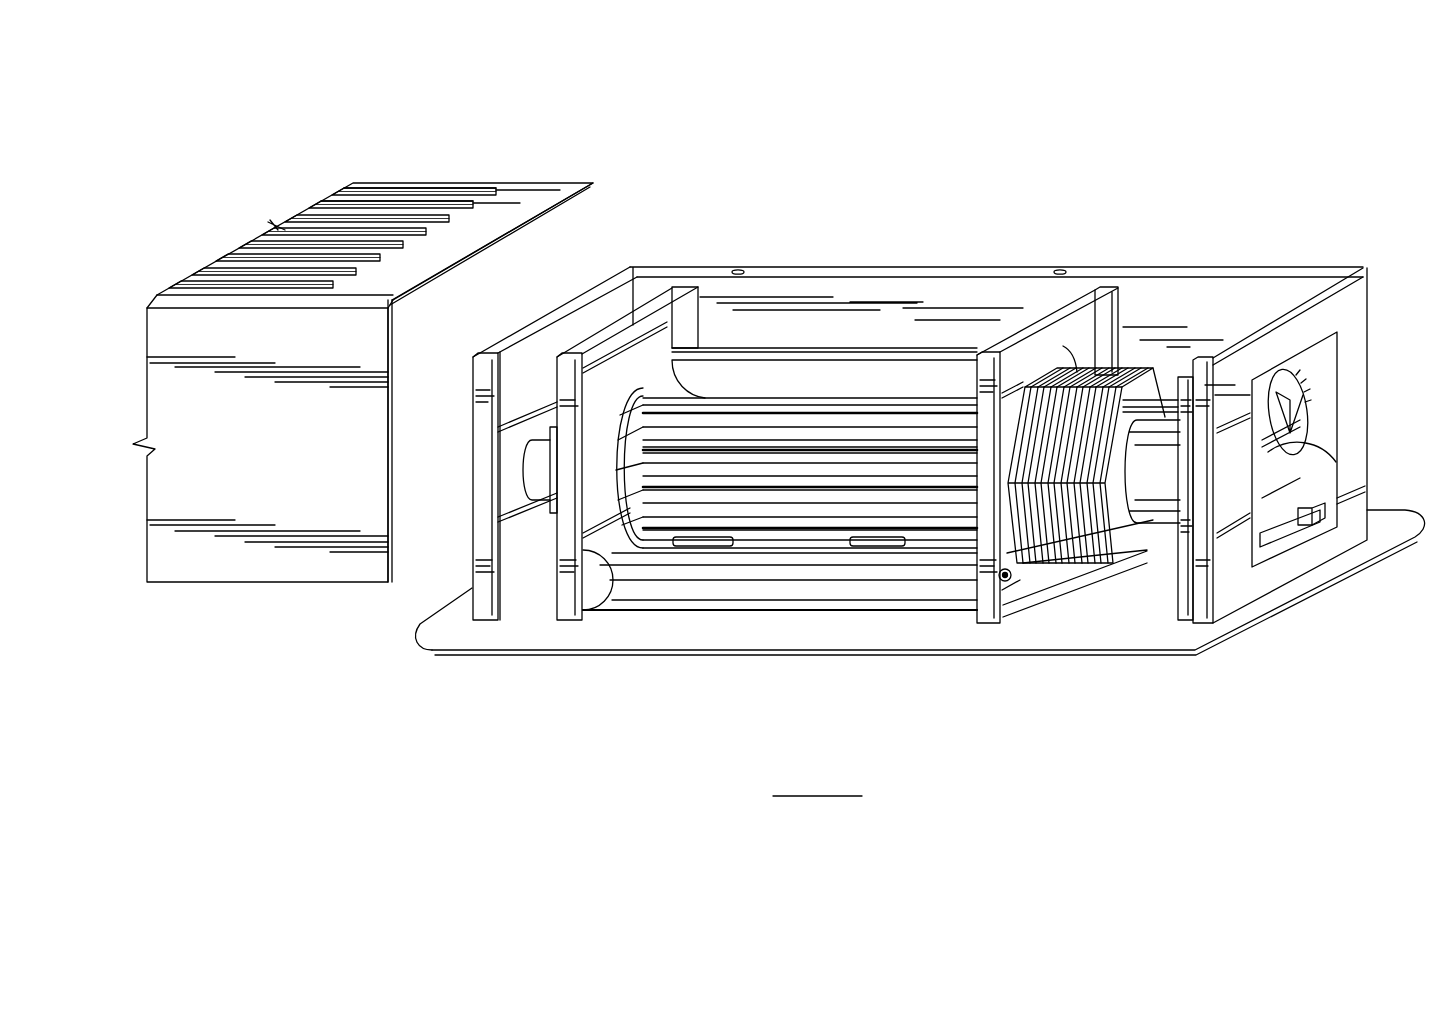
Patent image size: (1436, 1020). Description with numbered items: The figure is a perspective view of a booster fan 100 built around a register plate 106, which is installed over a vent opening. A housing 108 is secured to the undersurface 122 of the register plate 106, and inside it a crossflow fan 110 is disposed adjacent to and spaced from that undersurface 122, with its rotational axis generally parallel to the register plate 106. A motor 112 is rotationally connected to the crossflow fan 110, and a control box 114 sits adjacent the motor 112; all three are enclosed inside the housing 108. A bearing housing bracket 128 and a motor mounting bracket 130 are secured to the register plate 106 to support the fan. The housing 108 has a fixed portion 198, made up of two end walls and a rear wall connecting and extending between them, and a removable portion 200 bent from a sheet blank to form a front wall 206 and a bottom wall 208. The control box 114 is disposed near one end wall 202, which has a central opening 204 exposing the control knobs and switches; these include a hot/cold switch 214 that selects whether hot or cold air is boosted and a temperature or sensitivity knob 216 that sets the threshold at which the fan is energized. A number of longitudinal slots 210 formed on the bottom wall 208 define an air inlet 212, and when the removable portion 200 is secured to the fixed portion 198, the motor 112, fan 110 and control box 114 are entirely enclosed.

The booster fan 100 is at (1236, 180).
The register plate 106 is at (458, 628).
The housing 108 is at (708, 272).
The crossflow fan 110 is at (756, 425).
The motor 112 is at (1103, 347).
The control box 114 is at (1180, 567).
The undersurface of the register plate 122 is at (663, 633).
The bearing housing bracket 128 is at (565, 615).
The motor mounting bracket 130 is at (990, 615).
The fixed portion 198 is at (663, 268).
The removable portion 200 is at (556, 189).
The end wall 202 is at (1350, 300).
The central opening 204 is at (1260, 570).
The front wall 206 is at (258, 565).
The bottom wall 208 is at (512, 188).
The longitudinal slots 210 is at (440, 192).
The air inlet 212 is at (372, 190).
The hot/cold switch 214 is at (1317, 522).
The temperature or sensitivity knob 216 is at (1313, 427).